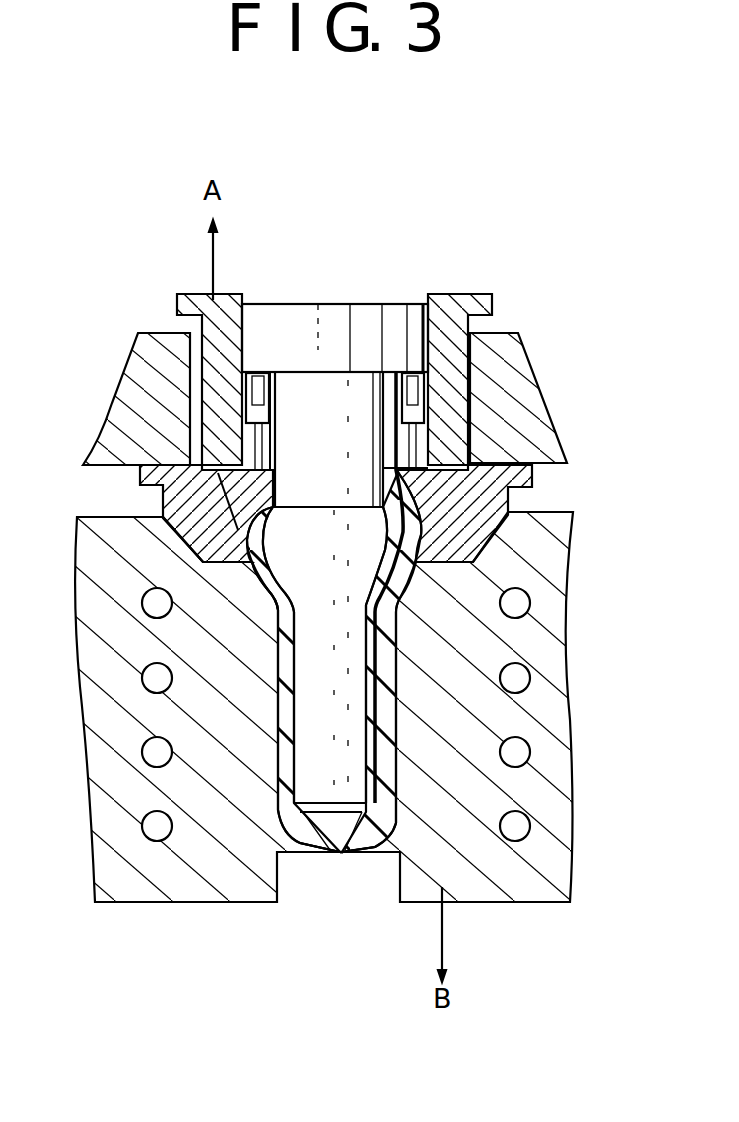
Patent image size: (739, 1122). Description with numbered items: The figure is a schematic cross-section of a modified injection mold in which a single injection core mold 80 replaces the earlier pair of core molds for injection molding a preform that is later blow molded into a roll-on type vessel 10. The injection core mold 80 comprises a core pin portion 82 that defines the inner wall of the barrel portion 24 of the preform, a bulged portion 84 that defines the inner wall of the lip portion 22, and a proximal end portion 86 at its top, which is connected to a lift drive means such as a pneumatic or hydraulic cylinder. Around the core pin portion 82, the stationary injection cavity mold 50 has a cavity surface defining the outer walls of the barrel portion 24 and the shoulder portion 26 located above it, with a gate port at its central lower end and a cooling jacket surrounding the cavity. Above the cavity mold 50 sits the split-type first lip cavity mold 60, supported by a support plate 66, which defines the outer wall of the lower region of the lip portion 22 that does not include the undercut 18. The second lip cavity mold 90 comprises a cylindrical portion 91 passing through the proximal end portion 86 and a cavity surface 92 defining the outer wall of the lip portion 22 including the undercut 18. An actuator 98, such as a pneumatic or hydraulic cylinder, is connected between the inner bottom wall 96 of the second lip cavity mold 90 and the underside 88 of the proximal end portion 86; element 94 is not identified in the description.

The vessel 10 is at (276, 718).
The undercut 18 is at (247, 520).
The lip portion 22 is at (260, 600).
The barrel portion 24 is at (295, 825).
The shoulder portion 26 is at (257, 607).
The injection cavity mold 50 is at (547, 820).
The first lip cavity mold 60 is at (336, 420).
The support plate 66 is at (102, 447).
The injection core mold 80 is at (430, 555).
The core pin portion 82 is at (367, 657).
The bulged portion 84 is at (400, 540).
The proximal end portion 86 is at (365, 328).
The underside 88 is at (243, 390).
The second lip cavity mold 90 is at (333, 353).
The cylindrical portion 91 is at (210, 325).
The cavity surface 92 is at (445, 490).
The right collar 94 is at (490, 306).
The inner bottom wall 96 is at (245, 465).
The actuator 98 is at (250, 415).